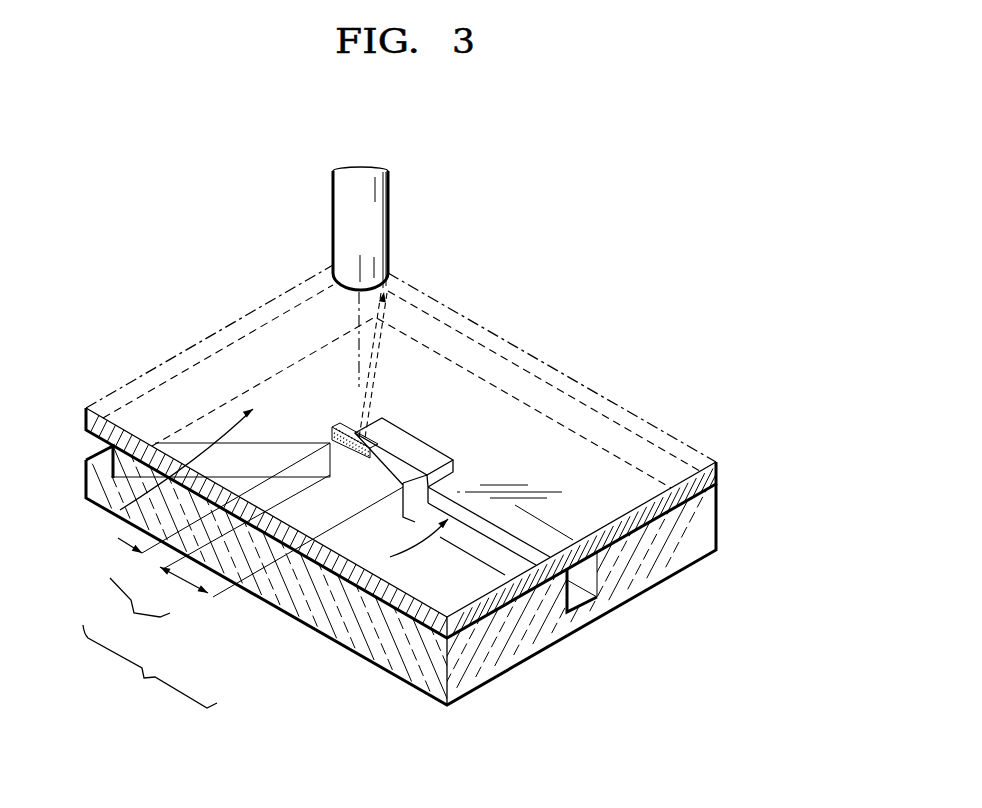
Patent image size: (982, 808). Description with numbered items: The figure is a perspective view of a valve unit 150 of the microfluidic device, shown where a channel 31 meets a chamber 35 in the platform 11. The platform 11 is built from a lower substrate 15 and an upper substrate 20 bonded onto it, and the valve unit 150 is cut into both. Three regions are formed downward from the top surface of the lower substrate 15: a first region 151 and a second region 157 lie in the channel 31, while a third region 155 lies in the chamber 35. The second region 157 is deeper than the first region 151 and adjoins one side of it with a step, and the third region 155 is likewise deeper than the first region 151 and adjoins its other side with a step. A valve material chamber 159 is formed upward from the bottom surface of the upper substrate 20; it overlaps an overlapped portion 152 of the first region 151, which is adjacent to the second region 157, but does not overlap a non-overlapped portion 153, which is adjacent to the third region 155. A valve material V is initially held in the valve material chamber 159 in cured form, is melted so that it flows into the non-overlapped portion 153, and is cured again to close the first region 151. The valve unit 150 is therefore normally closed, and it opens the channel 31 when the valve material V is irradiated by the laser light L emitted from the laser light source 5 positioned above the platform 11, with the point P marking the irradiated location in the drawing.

The laser light source 5 is at (390, 211).
The valve unit 150 is at (643, 287).
The chamber 35 is at (246, 370).
The laser light L is at (362, 332).
The valve material V is at (332, 435).
The processing point P is at (347, 428).
The valve material chamber 159 is at (409, 468).
The upper substrate 20 is at (717, 477).
The lower substrate 15 is at (717, 524).
The platform 11 is at (448, 572).
The second region 157 is at (313, 628).
The third region 155 is at (116, 513).
The non-overlapped portion 153 is at (224, 534).
The overlapped portion 152 is at (279, 546).
The first region 151 is at (137, 608).
The channel 31 is at (150, 670).